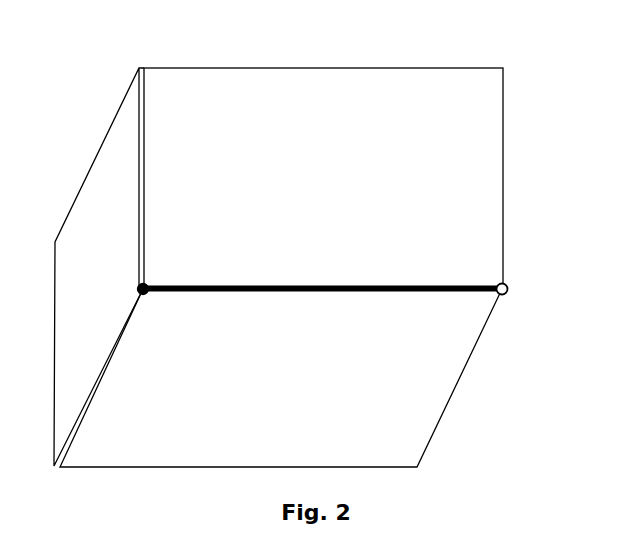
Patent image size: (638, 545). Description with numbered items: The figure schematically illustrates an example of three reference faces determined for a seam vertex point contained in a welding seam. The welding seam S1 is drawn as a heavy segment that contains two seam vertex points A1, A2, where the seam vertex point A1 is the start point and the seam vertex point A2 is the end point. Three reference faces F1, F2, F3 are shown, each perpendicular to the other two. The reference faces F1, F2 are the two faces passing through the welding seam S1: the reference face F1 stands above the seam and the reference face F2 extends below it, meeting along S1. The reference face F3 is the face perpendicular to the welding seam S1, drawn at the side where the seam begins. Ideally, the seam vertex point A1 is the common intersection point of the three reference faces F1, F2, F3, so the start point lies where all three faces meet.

The reference face F1 is at (323, 178).
The reference face F2 is at (281, 378).
The reference face F3 is at (99, 267).
The welding seam S1 is at (322, 272).
The seam vertex point A1 is at (153, 305).
The seam vertex point A2 is at (514, 305).